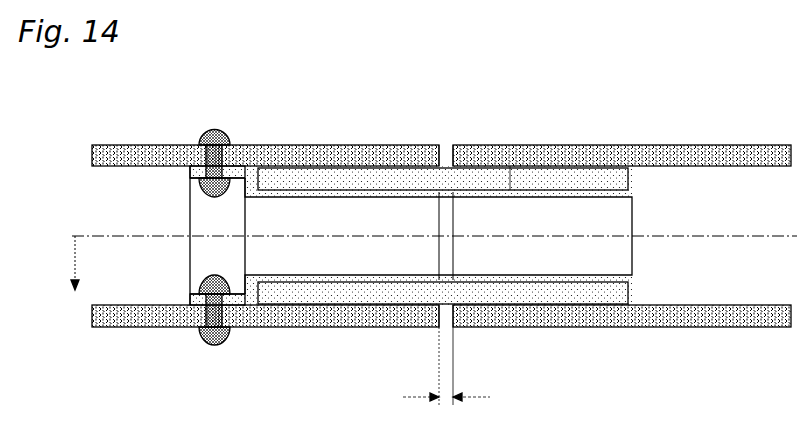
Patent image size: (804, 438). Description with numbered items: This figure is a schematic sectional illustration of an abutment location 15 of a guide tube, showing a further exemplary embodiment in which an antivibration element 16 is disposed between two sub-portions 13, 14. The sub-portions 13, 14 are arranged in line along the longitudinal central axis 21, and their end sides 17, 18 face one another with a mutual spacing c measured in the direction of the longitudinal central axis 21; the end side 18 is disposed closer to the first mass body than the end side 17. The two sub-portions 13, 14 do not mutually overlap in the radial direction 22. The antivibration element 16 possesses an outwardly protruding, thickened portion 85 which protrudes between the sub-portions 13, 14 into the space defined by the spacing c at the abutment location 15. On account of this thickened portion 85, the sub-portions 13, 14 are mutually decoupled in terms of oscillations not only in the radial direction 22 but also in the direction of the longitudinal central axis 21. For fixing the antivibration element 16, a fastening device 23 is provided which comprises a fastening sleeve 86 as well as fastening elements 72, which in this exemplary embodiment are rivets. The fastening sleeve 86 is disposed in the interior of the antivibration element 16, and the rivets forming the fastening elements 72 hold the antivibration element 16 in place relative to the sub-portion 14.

The sub-portion 13 is at (727, 145).
The sub-portion 14 is at (146, 144).
The gap between tube sections 15 is at (446, 145).
The antivibration element 16 is at (344, 146).
The end side 17 is at (438, 328).
The end side 18 is at (456, 328).
The longitudinal central axis 21 is at (75, 236).
The radial direction 22 is at (64, 263).
The fastening device 23 is at (510, 166).
The fastening element 72 is at (215, 130).
The thickened portion 85 is at (452, 148).
The fastening sleeve 86 is at (313, 327).
The spacing c is at (446, 409).